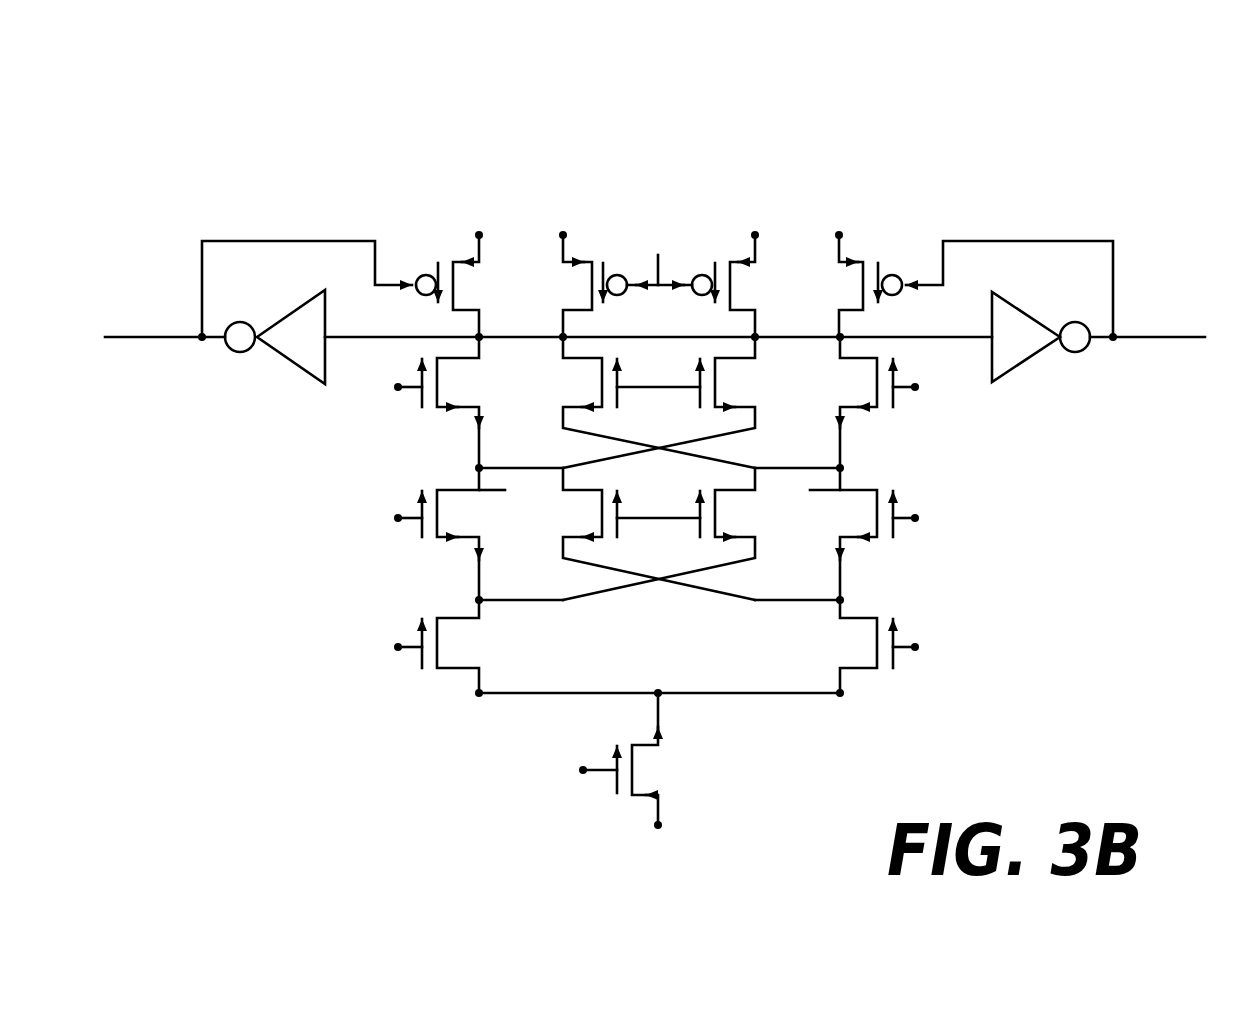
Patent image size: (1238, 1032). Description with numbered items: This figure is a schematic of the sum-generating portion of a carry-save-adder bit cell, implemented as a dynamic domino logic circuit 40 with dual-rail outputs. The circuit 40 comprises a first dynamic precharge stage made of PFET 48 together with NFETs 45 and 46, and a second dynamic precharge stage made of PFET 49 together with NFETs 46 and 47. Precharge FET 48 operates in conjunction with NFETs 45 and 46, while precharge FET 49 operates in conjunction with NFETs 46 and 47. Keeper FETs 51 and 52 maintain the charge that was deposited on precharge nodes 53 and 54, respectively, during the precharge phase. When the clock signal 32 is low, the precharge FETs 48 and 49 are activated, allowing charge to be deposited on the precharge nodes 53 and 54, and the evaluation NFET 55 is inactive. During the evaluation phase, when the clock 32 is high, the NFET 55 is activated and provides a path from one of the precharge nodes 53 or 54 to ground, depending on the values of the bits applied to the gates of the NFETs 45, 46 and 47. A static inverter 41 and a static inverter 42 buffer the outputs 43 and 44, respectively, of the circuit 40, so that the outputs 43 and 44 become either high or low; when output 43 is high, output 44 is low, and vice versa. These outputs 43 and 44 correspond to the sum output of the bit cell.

The circuit 40 is at (1090, 142).
The static inverter 41 is at (290, 362).
The static inverter 42 is at (1020, 364).
The output 43 is at (140, 340).
The output 44 is at (1168, 340).
The NFETs 45 is at (421, 411).
The NFETs 46 is at (576, 383).
The NFETs 47 is at (894, 412).
The PFET 48 is at (576, 285).
The PFET 49 is at (750, 287).
The keeper FET 51 is at (483, 194).
The keeper FET 52 is at (836, 194).
The precharge node 53 is at (357, 334).
The precharge node 54 is at (958, 334).
The evaluation NFET 55 is at (650, 768).
The clock signal 32 is at (657, 220).